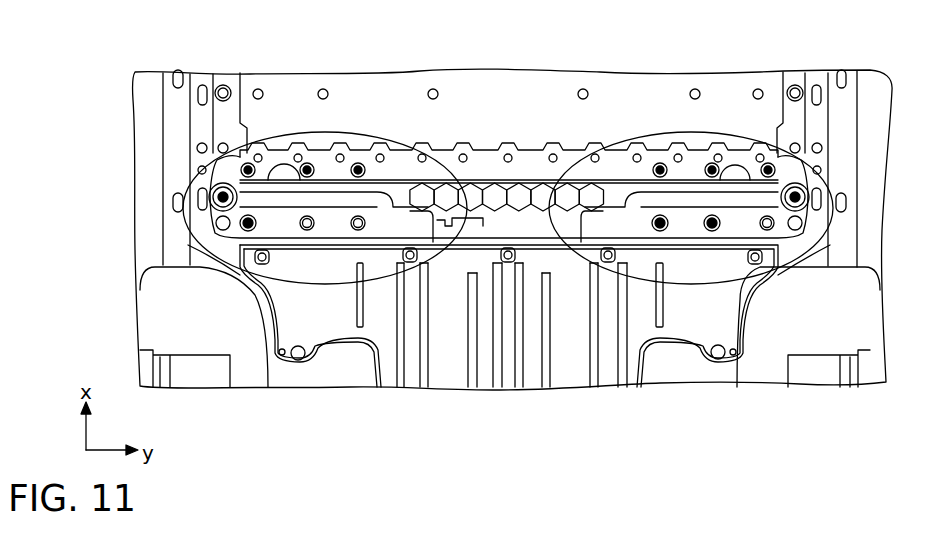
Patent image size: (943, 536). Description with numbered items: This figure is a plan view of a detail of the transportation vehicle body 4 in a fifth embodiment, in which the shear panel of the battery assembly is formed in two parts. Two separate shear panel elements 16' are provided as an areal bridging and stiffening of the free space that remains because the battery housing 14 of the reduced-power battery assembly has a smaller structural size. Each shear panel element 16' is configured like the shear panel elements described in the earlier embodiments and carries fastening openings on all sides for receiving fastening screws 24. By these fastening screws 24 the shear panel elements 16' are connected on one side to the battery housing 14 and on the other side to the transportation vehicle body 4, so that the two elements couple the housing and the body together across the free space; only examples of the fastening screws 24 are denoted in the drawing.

The transportation vehicle body 4 is at (508, 358).
The battery housing 14 is at (519, 98).
The shear panel element 16' is at (508, 148).
The fastening screw 24 is at (357, 170).